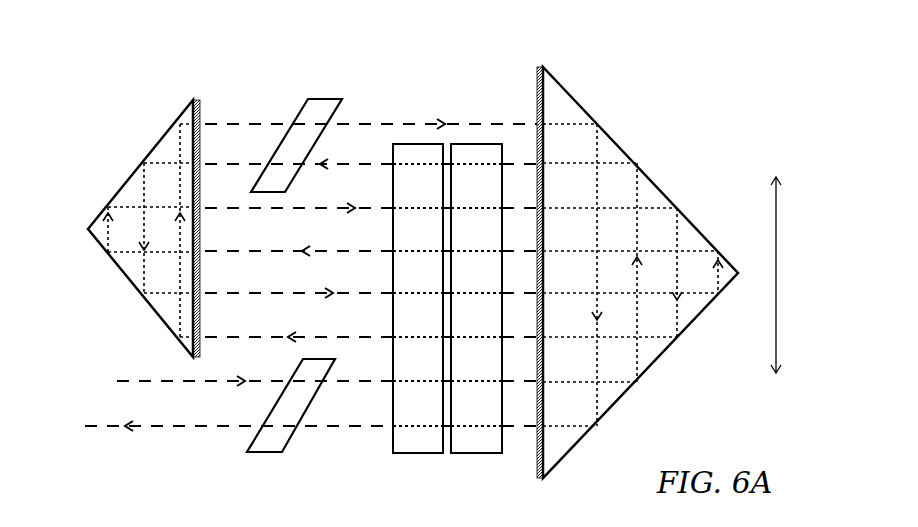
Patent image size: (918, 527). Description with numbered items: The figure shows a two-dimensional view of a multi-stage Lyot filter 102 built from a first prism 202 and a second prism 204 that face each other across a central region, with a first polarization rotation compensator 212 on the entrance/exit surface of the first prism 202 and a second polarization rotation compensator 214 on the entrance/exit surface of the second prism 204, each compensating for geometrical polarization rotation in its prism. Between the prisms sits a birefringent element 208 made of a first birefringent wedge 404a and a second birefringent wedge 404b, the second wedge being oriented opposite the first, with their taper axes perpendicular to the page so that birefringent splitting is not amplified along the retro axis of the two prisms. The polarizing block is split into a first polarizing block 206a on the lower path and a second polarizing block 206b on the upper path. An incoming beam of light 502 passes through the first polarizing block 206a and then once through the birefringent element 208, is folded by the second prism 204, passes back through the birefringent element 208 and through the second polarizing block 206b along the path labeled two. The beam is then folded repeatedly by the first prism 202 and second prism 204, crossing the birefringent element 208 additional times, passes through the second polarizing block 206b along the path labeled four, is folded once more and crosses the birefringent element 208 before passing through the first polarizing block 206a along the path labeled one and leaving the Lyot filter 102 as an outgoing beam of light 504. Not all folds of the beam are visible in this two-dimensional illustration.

The Lyot filter 102 is at (90, 80).
The first prism 202 is at (130, 178).
The second prism 204 is at (622, 148).
The first polarizing block 206a is at (258, 452).
The second polarizing block 206b is at (327, 100).
The birefringent element 208 is at (446, 110).
The first polarization rotation compensator 212 is at (199, 100).
The second polarization rotation compensator 214 is at (541, 66).
The first birefringent wedge 404a is at (418, 455).
The second birefringent wedge 404b is at (490, 455).
The incoming beam of light 502 is at (150, 378).
The outgoing beam of light 504 is at (195, 428).